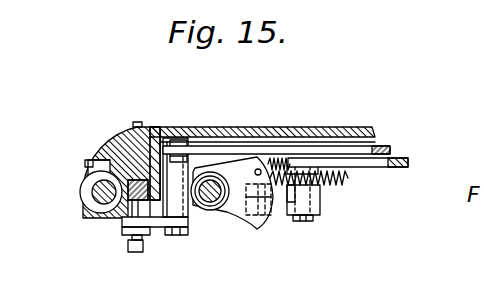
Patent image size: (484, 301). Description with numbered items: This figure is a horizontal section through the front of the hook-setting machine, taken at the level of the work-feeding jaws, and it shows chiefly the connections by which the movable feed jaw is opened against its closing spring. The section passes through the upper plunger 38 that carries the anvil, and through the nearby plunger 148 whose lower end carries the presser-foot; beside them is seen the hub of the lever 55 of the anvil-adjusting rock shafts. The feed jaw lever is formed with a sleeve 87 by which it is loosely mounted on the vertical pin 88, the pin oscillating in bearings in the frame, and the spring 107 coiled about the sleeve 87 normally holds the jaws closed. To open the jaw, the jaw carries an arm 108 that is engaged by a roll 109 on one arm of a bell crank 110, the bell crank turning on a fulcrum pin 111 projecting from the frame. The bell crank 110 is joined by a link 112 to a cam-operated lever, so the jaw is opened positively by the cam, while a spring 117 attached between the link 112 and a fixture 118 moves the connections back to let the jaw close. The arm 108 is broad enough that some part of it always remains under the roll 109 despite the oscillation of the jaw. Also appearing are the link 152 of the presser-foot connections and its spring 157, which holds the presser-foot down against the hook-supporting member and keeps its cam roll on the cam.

The lever 55 is at (118, 140).
The plunger 38 is at (80, 189).
The plunger 148 is at (142, 170).
The vertical pin 88 is at (212, 127).
The fixture 118 is at (243, 160).
The spring 107 is at (196, 221).
The arm 108 is at (243, 224).
The sleeve 87 is at (210, 210).
The roll 109 is at (246, 204).
The spring 157 is at (305, 218).
The bell crank 110 is at (321, 206).
The fulcrum pin 111 is at (305, 224).
The link 152 is at (392, 146).
The link 112 is at (381, 168).
The spring 117 is at (280, 158).